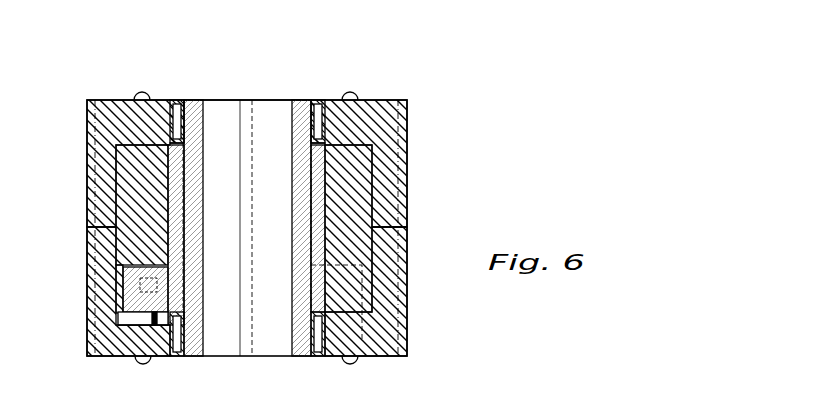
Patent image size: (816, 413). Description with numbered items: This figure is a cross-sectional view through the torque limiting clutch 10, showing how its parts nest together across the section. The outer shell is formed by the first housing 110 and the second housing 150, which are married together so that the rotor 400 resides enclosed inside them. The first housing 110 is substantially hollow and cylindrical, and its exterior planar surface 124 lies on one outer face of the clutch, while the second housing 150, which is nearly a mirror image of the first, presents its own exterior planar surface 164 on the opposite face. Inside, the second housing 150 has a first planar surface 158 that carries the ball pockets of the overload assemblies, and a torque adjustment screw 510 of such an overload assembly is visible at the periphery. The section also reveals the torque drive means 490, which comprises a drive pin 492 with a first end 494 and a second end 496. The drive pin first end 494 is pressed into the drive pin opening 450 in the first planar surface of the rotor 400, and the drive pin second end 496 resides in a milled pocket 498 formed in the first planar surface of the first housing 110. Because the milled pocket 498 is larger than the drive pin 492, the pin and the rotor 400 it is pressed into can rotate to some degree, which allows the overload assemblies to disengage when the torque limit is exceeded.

The torque limiting clutch 10 is at (277, 84).
The first housing 110 is at (407, 248).
The exterior planar surface 124 is at (333, 360).
The second housing 150 is at (407, 175).
The first planar surface 158 is at (347, 308).
The exterior planar surface 164 is at (373, 100).
The rotor 400 is at (125, 298).
The drive pin opening 450 is at (195, 358).
The torque drive means 490 is at (116, 288).
The drive pin 492 is at (143, 364).
The drive pin first end 494 is at (125, 322).
The drive pin second end 496 is at (157, 280).
The milled pocket 498 is at (98, 333).
The torque adjustment screw 510 is at (142, 91).